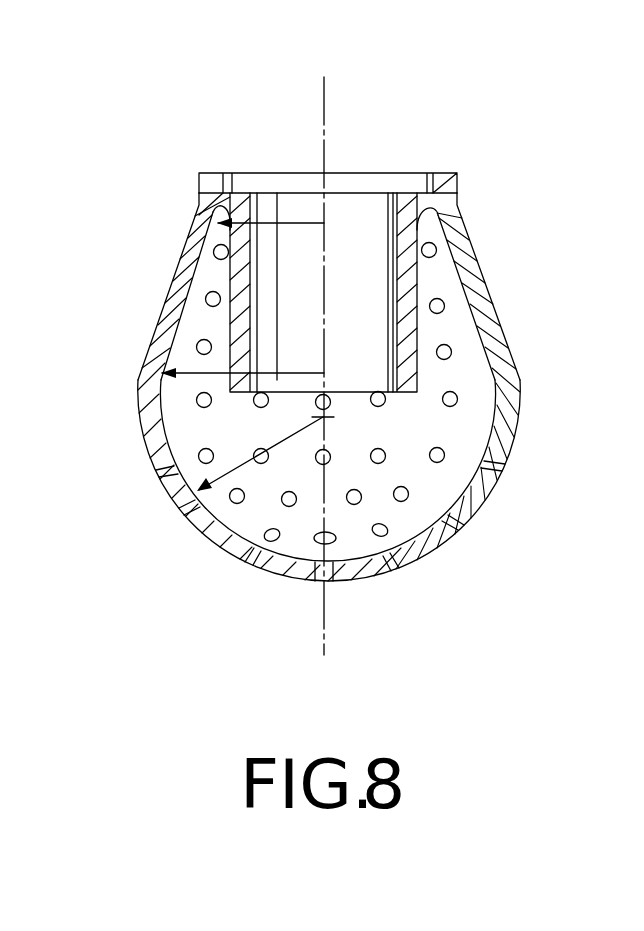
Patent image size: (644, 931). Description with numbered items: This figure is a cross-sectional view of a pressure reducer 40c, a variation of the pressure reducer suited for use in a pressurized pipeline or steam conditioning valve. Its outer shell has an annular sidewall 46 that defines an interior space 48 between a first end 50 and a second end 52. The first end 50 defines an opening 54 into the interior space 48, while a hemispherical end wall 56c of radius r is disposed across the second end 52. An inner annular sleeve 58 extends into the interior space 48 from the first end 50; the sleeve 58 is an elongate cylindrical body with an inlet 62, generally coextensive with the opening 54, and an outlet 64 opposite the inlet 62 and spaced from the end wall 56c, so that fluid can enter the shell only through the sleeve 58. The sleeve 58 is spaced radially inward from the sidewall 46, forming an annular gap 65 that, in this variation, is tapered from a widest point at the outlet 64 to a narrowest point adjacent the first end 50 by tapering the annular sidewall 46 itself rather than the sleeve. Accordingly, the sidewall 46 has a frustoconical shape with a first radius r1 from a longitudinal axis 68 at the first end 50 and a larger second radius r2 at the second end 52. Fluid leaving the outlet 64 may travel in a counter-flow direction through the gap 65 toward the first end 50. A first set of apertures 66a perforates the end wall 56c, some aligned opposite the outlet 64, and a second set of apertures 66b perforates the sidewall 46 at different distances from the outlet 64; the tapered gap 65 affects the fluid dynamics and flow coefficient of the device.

The pressure reducer 40c is at (503, 222).
The annular sidewall 46 is at (513, 370).
The interior space 48 is at (383, 284).
The first end 50 is at (197, 207).
The second end 52 is at (138, 373).
The opening 54 is at (362, 210).
The end wall 56c is at (440, 546).
The inner annular sleeve 58 is at (482, 285).
The inlet 62 is at (373, 193).
The outlet 64 is at (384, 404).
The annular gap 65 is at (228, 266).
The first set of apertures 66a is at (192, 517).
The second set of apertures 66b is at (495, 352).
The longitudinal axis 68 is at (325, 118).
The radius r is at (250, 458).
The first radius r1 is at (292, 212).
The second radius r2 is at (183, 372).